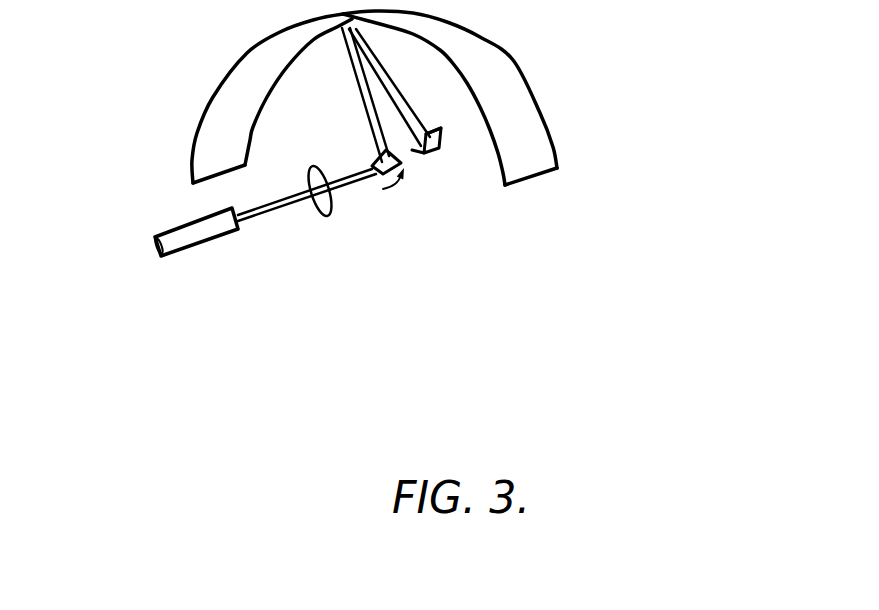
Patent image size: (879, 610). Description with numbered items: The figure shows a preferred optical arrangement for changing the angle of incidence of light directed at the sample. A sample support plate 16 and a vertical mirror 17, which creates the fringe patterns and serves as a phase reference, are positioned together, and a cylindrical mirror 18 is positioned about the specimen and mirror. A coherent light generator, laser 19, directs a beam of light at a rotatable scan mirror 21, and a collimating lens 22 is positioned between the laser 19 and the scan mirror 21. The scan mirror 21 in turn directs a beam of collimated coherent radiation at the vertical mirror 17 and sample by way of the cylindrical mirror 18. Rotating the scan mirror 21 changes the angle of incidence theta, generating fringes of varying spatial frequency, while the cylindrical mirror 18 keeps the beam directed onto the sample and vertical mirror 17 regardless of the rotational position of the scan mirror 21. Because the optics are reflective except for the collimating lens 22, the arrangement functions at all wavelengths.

The cylindrical mirror 18 is at (527, 74).
The vertical mirror 17 is at (440, 137).
The sample support plate 16 is at (412, 156).
The scan mirror 21 is at (382, 188).
The collimating lens 22 is at (322, 217).
The laser 19 is at (174, 229).